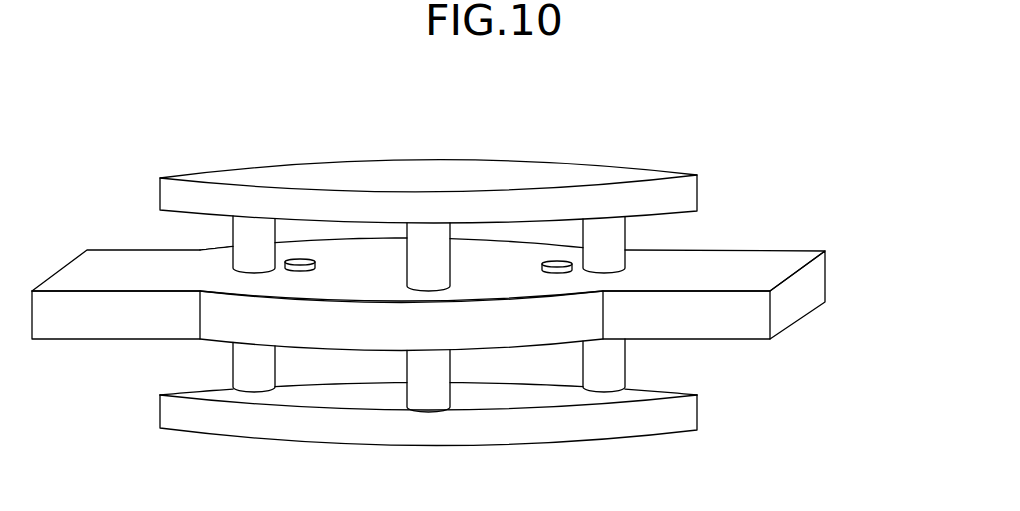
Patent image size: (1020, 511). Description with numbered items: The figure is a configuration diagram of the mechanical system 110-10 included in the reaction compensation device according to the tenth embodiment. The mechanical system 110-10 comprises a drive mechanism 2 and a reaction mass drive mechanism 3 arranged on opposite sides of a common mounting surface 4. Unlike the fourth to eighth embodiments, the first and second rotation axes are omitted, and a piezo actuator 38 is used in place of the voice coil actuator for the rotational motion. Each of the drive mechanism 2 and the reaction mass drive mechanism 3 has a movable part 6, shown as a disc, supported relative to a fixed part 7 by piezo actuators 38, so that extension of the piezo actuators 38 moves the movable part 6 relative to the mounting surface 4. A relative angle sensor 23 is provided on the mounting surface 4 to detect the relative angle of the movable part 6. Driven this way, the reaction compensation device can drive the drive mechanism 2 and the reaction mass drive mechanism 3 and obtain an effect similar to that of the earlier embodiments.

The mechanical system 110-10 is at (853, 138).
The drive mechanism 2 is at (819, 83).
The reaction mass drive mechanism 3 is at (819, 370).
The mounting surface 4 is at (782, 315).
The movable part 6 is at (685, 190).
The fixed part 7 is at (386, 262).
The relative angle sensor 23 is at (550, 272).
The piezo actuator 38 is at (423, 242).